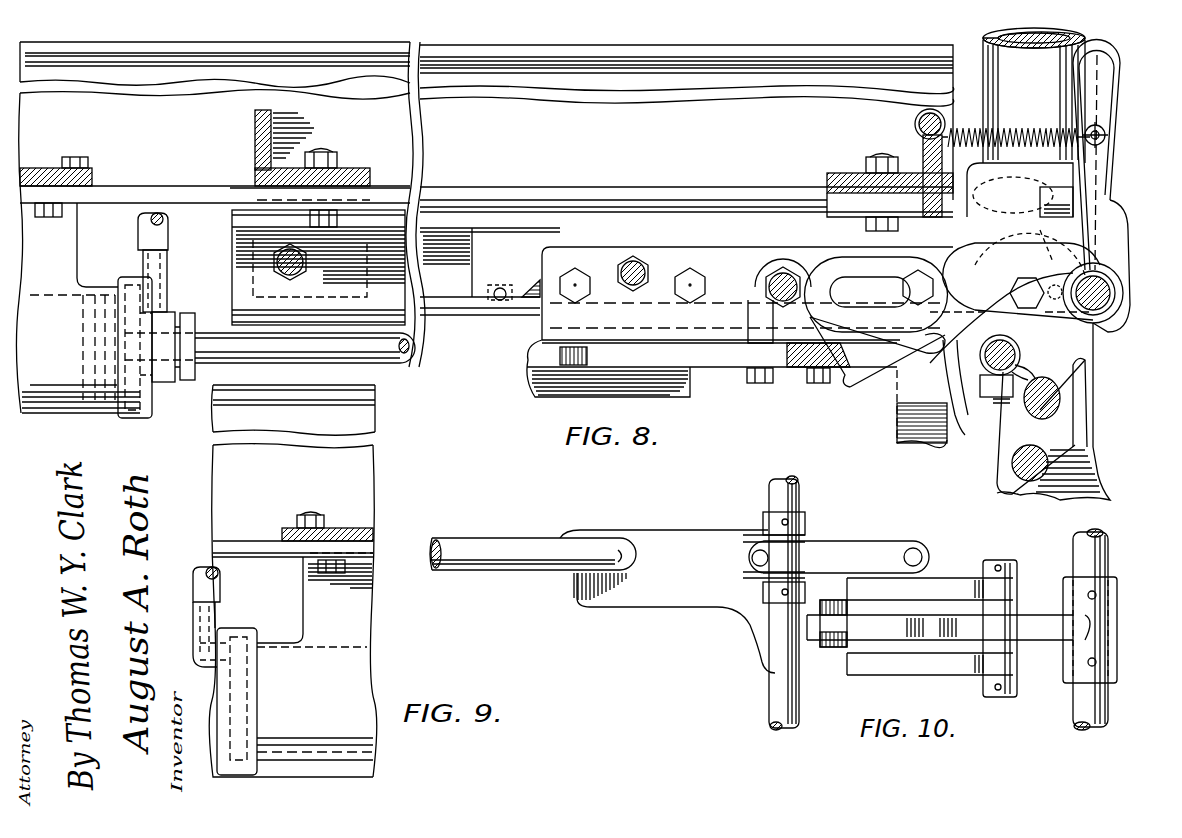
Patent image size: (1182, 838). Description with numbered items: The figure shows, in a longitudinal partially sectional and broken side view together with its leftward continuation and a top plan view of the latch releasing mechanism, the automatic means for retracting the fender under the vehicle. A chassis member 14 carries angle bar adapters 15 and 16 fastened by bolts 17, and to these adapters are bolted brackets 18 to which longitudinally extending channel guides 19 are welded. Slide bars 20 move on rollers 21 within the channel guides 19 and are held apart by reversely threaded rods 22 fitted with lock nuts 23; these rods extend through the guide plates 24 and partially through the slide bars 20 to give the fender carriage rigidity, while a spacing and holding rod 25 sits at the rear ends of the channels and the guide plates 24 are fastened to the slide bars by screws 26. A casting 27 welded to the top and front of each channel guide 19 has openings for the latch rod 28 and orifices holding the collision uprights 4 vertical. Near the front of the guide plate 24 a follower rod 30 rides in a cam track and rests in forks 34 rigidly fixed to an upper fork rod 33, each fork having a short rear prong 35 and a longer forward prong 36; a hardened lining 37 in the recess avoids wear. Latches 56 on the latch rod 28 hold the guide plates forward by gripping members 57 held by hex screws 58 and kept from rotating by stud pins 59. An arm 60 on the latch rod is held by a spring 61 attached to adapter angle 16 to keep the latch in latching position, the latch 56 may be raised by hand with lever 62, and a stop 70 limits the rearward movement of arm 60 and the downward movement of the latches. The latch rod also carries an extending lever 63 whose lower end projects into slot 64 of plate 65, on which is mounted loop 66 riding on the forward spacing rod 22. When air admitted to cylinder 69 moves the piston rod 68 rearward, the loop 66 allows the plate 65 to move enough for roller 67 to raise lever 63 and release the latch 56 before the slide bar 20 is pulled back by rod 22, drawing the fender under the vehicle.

In FIG. 8, the collision upright 4 is at (1042, 106).
In FIG. 8, the frame rail 14 is at (196, 133).
In FIG. 9, the frame rail 14 is at (365, 475).
In FIG. 8, the angle bar adapter 15 is at (255, 147).
In FIG. 8, the angle bar adapter 16 is at (923, 147).
In FIG. 8, the bolt 17 is at (340, 158).
In FIG. 8, the bracket 18 is at (329, 297).
In FIG. 8, the channel guide 19 is at (398, 293).
In FIG. 8, the slide bar 20 is at (500, 233).
In FIG. 8, the roller 21 is at (505, 302).
In FIG. 8, the spacing rod 22 is at (648, 270).
In FIG. 10, the spacing rod 22 is at (775, 493).
In FIG. 8, the lock nut 23 is at (628, 262).
In FIG. 8, the guide plate 24 is at (590, 378).
In FIG. 8, the spacing and holding rod 25 is at (274, 267).
In FIG. 8, the screw 26 is at (560, 280).
In FIG. 8, the casting 27 is at (1113, 215).
In FIG. 8, the latch rod 28 is at (1108, 315).
In FIG. 10, the latch rod 28 is at (1110, 562).
In FIG. 8, the follower rod 30 is at (1056, 417).
In FIG. 8, the fork rod 33 is at (1010, 465).
In FIG. 8, the fork 34 is at (1052, 436).
In FIG. 8, the rear prong 35 is at (1020, 388).
In FIG. 8, the forward prong 36 is at (1078, 388).
In FIG. 8, the hardened lining 37 is at (1030, 380).
In FIG. 8, the latch 56 is at (975, 228).
In FIG. 8, the member 57 is at (1003, 291).
In FIG. 8, the hex screw 58 is at (1005, 280).
In FIG. 8, the stud pin 59 is at (1030, 252).
In FIG. 8, the arm 60 is at (1103, 160).
In FIG. 8, the spring 61 is at (1045, 128).
In FIG. 8, the lever 62 is at (1113, 108).
In FIG. 8, the lever 63 is at (965, 440).
In FIG. 10, the lever 63 is at (958, 632).
In FIG. 8, the slot 64 is at (853, 385).
In FIG. 10, the slot 64 is at (905, 600).
In FIG. 10, the plate 65 is at (705, 537).
In FIG. 8, the loop 66 is at (845, 265).
In FIG. 10, the loop 66 is at (930, 557).
In FIG. 8, the roller 67 is at (1022, 351).
In FIG. 10, the roller 67 is at (1020, 610).
In FIG. 8, the piston rod 68 is at (402, 363).
In FIG. 10, the piston rod 68 is at (485, 540).
In FIG. 8, the cylinder 69 is at (66, 330).
In FIG. 9, the cylinder 69 is at (299, 676).
In FIG. 8, the stop 70 is at (1052, 208).